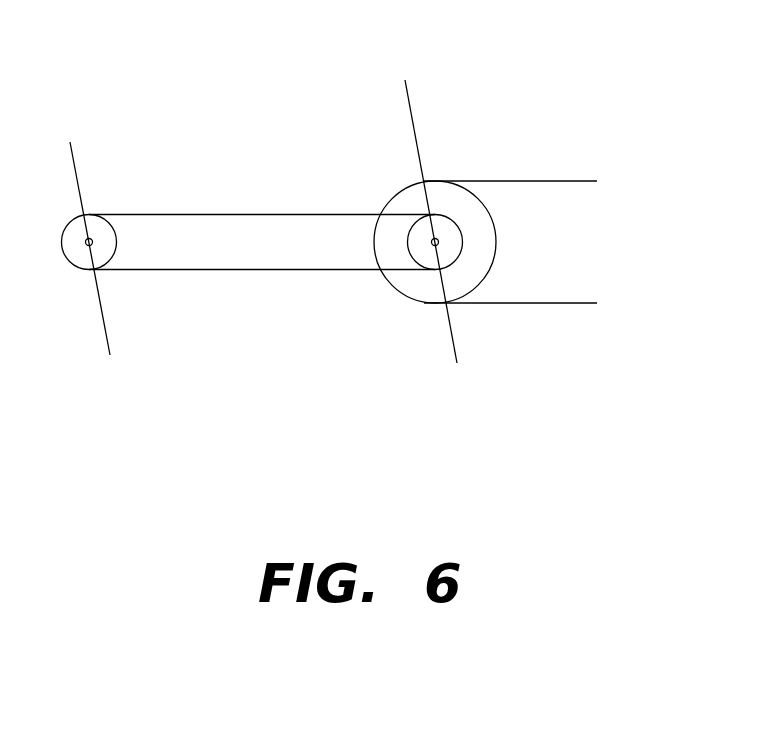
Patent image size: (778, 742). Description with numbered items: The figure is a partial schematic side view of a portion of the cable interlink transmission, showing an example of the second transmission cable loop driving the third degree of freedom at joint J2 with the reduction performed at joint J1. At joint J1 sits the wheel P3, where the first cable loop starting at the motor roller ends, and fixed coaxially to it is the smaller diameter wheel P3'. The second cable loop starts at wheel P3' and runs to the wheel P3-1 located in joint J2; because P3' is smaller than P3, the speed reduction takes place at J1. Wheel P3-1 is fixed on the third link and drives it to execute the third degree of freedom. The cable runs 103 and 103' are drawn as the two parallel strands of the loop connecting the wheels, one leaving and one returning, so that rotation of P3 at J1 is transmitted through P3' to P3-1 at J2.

The wheel P3-1 is at (98, 200).
The wheel P3 is at (435, 181).
The smaller diameter wheel P3' is at (492, 310).
The belt 103 is at (511, 91).
The belt (second) 103' is at (548, 214).
The joint J1 is at (431, 225).
The joint J2 is at (109, 256).